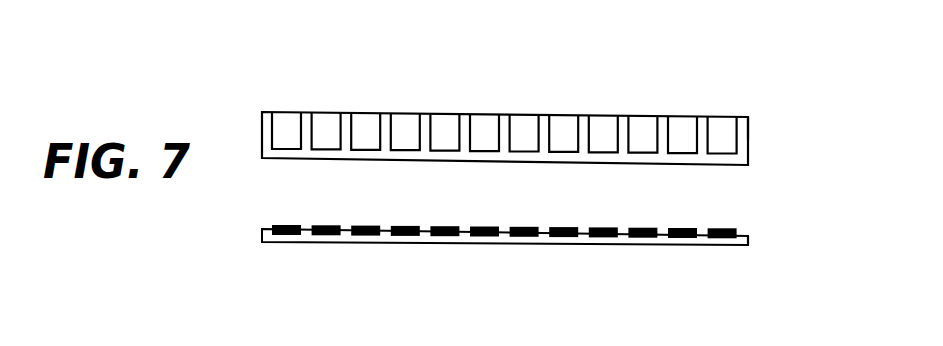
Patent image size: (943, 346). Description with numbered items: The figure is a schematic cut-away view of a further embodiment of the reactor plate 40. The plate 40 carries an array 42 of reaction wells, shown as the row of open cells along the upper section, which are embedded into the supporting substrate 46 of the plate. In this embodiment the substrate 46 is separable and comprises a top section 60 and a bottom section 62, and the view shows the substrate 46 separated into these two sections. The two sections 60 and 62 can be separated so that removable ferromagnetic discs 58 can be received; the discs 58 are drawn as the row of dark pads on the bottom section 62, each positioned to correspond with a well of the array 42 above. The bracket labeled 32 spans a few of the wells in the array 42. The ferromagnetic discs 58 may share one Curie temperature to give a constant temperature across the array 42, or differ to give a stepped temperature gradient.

The light emitting cell 32 is at (448, 113).
The reactor plate 40 is at (271, 96).
The array 42 is at (505, 101).
The substrate 46 is at (550, 207).
The ferromagnetic discs 58 is at (563, 238).
The top section 60 is at (749, 125).
The bottom section 62 is at (750, 241).